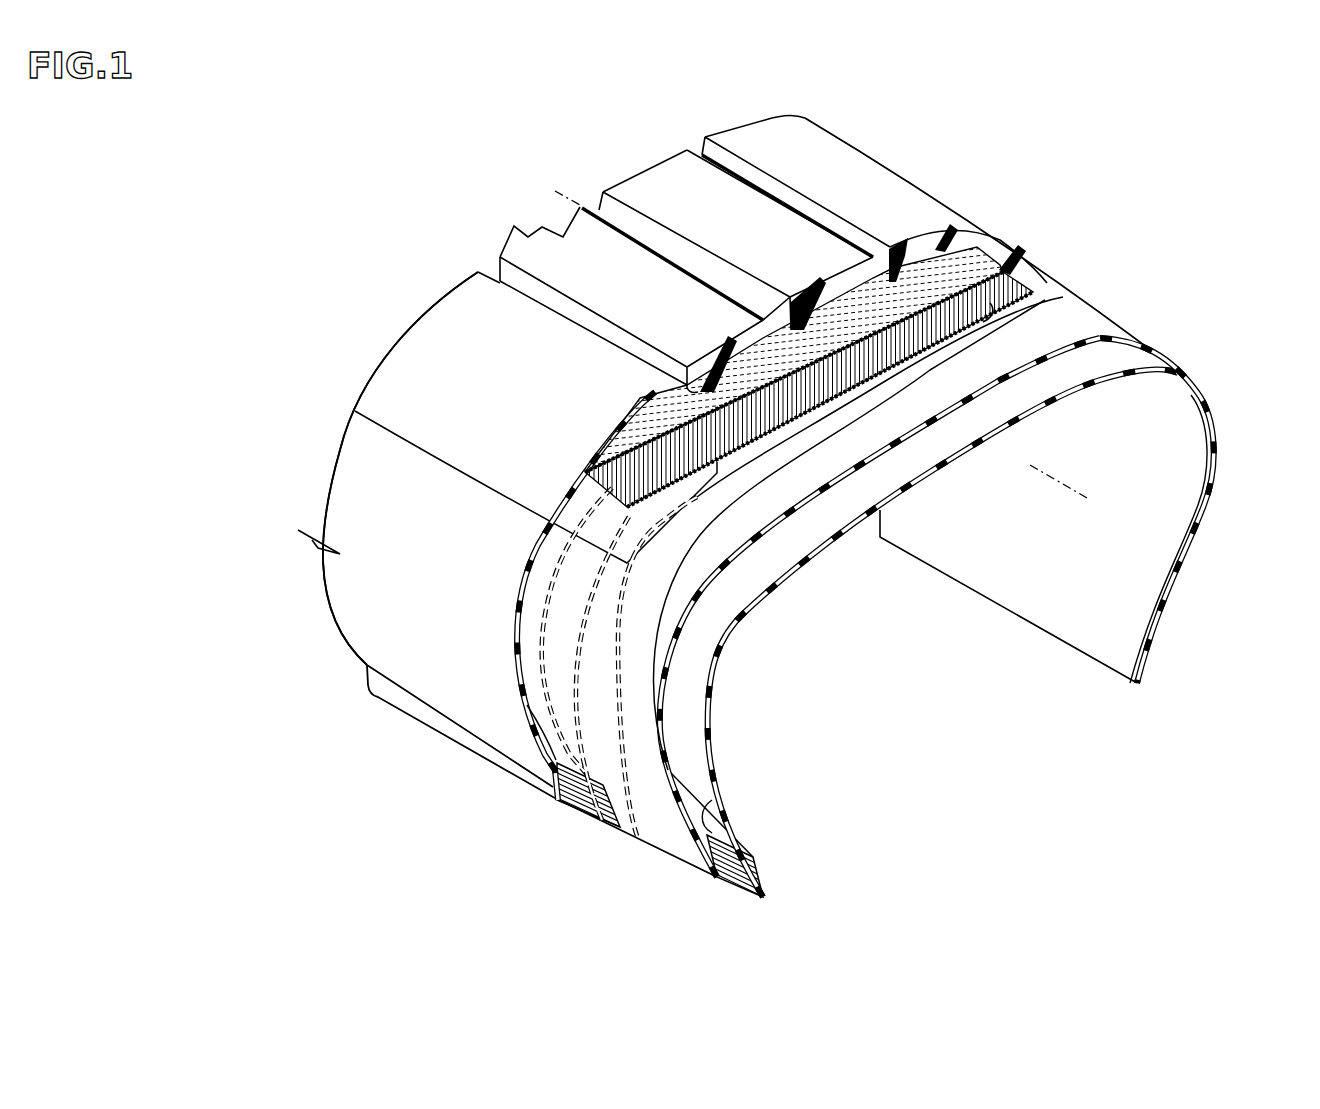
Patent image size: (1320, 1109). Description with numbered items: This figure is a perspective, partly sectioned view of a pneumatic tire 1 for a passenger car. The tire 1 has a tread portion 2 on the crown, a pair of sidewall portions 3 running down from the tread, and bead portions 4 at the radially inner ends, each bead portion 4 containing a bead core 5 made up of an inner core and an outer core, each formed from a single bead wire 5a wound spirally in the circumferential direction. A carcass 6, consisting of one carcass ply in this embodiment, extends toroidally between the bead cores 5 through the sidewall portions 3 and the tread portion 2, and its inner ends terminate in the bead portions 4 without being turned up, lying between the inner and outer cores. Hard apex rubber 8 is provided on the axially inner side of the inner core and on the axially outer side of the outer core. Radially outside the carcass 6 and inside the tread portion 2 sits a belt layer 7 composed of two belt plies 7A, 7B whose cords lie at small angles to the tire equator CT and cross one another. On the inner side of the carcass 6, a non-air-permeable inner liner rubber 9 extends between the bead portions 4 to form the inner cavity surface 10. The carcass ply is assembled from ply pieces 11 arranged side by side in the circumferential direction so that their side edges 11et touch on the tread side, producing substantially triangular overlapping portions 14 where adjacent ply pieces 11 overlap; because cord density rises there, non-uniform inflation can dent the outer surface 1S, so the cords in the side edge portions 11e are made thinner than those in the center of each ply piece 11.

The pneumatic tire 1 is at (888, 133).
The tread portion 2 is at (677, 200).
The sidewall portion 3 is at (396, 503).
The bead portion 4 is at (401, 690).
The bead core 5 is at (447, 890).
The bead wire 5a is at (556, 788).
The carcass 6 is at (1187, 240).
The belt layer 7 is at (943, 620).
The belt ply 7A is at (772, 403).
The belt ply 7B is at (848, 385).
The apex rubber 8 is at (547, 717).
The inner liner rubber 9 is at (1010, 413).
The inner cavity surface 10 is at (1123, 563).
The ply piece 11 is at (1043, 310).
The side edge portion 11e is at (697, 862).
The side edge 11et is at (983, 322).
The overlapping portion 14 is at (620, 830).
The tire equator CT is at (553, 190).
The outer surface 1S is at (375, 592).